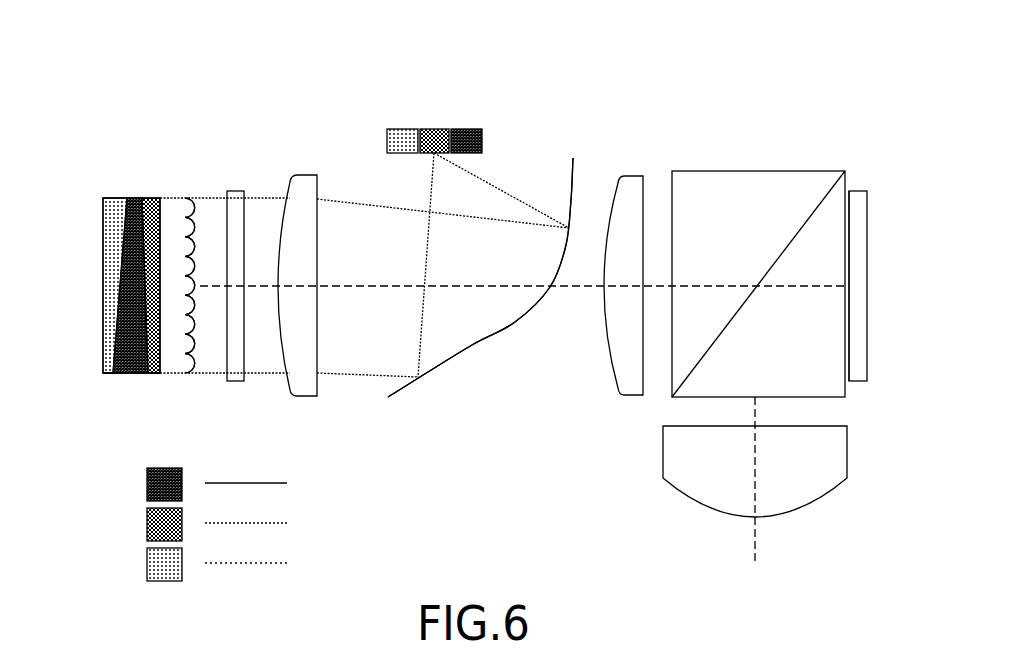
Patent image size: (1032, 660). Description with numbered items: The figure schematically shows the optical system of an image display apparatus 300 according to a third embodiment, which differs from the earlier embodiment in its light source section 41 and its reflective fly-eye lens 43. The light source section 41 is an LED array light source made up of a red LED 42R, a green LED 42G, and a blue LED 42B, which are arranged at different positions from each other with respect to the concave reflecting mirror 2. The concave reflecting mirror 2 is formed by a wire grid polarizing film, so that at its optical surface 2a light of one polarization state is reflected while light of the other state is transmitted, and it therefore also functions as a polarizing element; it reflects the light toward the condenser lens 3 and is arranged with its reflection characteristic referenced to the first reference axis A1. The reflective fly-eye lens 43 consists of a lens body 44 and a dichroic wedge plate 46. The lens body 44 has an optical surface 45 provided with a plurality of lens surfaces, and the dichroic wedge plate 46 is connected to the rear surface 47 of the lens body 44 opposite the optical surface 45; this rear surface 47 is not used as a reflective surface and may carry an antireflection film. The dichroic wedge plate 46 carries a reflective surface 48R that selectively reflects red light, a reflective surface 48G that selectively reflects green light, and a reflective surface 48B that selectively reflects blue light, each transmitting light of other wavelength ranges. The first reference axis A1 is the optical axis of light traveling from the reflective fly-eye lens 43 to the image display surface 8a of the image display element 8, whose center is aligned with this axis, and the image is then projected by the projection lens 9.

The image display apparatus 300 is at (541, 80).
The reflective fly-eye lens 43 is at (148, 160).
The dichroic wedge plate 46 is at (107, 197).
The rear surface 47 is at (150, 374).
The reflective surface 48R is at (103, 268).
The reflective surface 48G is at (162, 343).
The reflective surface 48B is at (103, 337).
The lens body 44 is at (183, 197).
The optical surface 45 is at (197, 222).
The condenser lens 3 is at (306, 174).
The first reference axis A1 is at (457, 284).
The light source section 41 is at (430, 98).
The blue LED 42B is at (405, 128).
The green LED 42G is at (438, 129).
The red LED 42R is at (483, 136).
The concave reflecting mirror 2 is at (573, 168).
The optical surface 2a is at (569, 210).
The image display element 8 is at (860, 190).
The image display surface 8a is at (840, 243).
The projection lens 9 is at (712, 512).